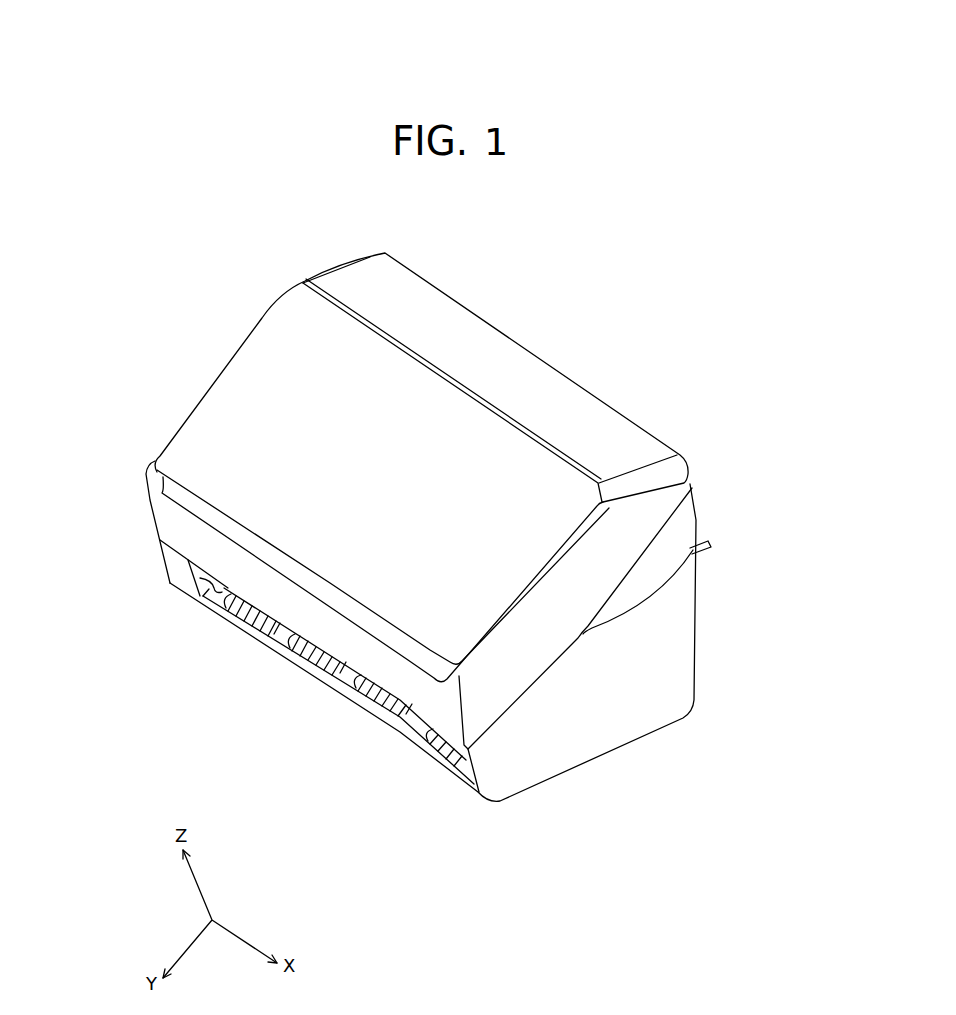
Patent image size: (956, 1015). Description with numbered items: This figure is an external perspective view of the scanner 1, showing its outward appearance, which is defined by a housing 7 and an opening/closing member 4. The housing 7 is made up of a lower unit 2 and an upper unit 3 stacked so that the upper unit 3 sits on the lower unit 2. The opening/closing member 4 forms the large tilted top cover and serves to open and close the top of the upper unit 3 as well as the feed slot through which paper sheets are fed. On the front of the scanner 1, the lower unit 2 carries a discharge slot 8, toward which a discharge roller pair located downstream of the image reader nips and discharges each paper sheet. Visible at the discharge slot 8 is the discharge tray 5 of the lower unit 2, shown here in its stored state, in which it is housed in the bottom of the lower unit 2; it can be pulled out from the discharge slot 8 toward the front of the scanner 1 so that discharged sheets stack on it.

The scanner 1 is at (600, 313).
The lower unit 2 is at (675, 656).
The upper unit 3 is at (603, 578).
The opening/closing member 4 is at (263, 316).
The discharge tray 5 is at (232, 622).
The housing 7 is at (760, 688).
The discharge slot 8 is at (203, 583).